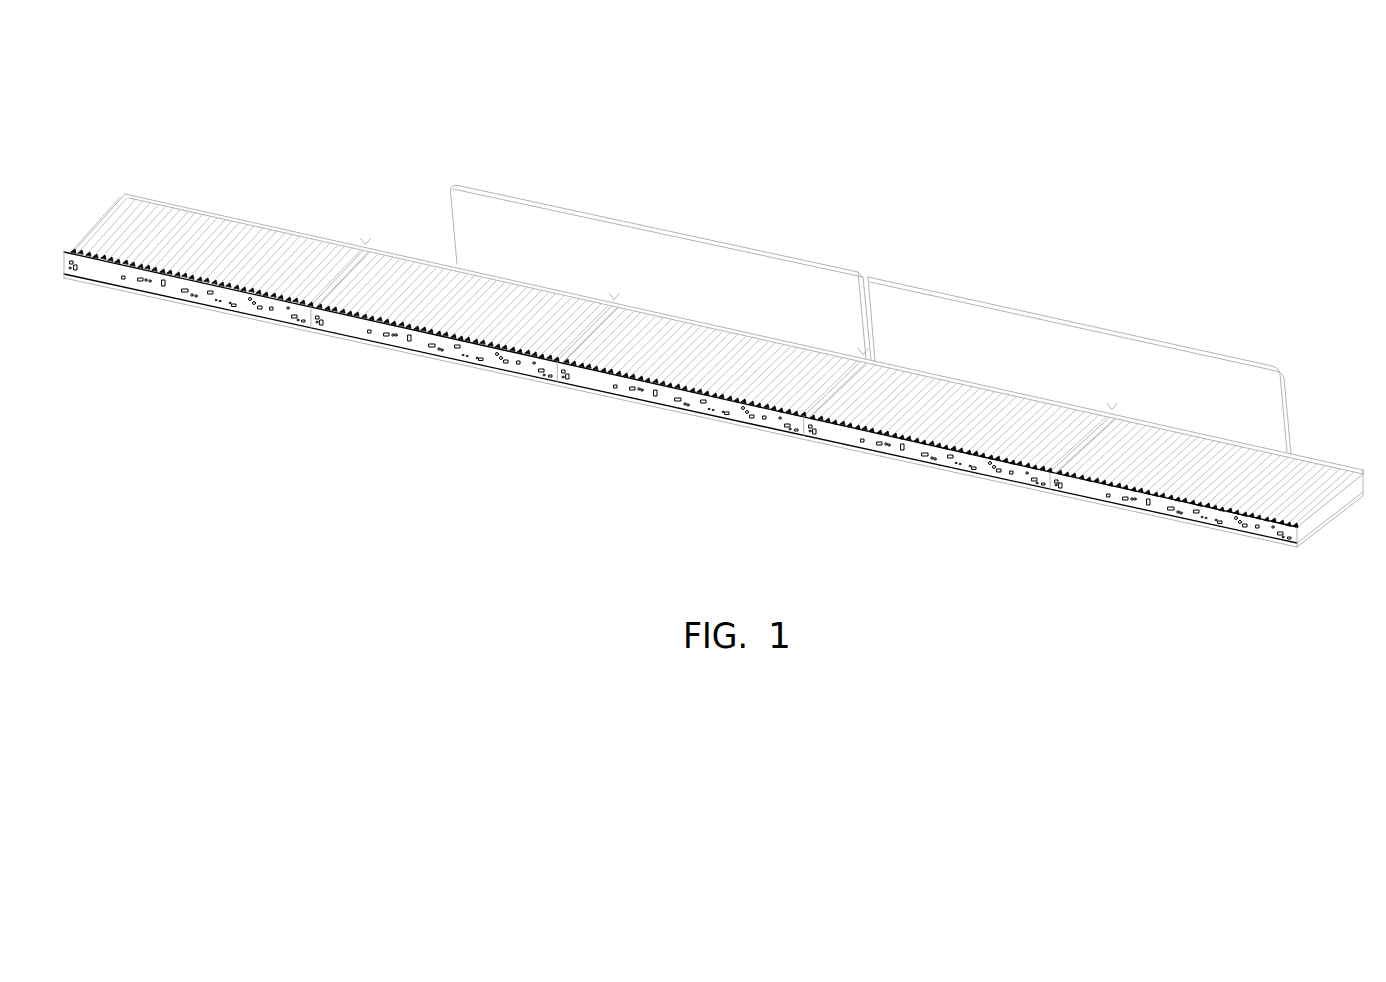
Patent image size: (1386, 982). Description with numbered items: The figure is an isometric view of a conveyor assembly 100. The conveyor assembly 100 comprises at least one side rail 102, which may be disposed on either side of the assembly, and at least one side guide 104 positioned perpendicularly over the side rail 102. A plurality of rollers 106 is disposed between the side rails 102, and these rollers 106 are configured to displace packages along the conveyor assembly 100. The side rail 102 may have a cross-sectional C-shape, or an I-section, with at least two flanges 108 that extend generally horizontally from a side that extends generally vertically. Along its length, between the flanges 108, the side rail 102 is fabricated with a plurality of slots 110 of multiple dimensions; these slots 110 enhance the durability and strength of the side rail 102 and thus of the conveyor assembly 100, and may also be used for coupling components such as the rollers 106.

The conveyor assembly 100 is at (298, 62).
The side rail 102 is at (330, 243).
The side guide 104 is at (498, 189).
The rollers 106 is at (424, 312).
The flanges 108 is at (1347, 465).
The slots 110 is at (733, 421).